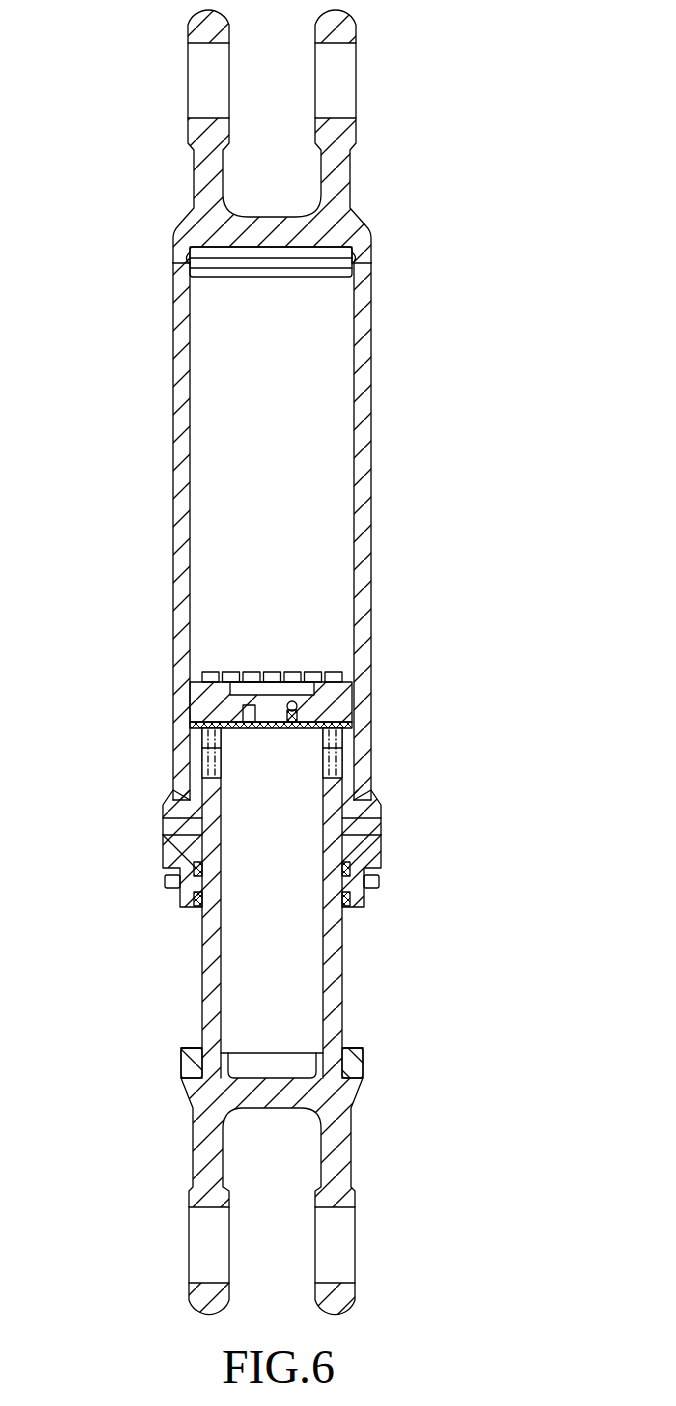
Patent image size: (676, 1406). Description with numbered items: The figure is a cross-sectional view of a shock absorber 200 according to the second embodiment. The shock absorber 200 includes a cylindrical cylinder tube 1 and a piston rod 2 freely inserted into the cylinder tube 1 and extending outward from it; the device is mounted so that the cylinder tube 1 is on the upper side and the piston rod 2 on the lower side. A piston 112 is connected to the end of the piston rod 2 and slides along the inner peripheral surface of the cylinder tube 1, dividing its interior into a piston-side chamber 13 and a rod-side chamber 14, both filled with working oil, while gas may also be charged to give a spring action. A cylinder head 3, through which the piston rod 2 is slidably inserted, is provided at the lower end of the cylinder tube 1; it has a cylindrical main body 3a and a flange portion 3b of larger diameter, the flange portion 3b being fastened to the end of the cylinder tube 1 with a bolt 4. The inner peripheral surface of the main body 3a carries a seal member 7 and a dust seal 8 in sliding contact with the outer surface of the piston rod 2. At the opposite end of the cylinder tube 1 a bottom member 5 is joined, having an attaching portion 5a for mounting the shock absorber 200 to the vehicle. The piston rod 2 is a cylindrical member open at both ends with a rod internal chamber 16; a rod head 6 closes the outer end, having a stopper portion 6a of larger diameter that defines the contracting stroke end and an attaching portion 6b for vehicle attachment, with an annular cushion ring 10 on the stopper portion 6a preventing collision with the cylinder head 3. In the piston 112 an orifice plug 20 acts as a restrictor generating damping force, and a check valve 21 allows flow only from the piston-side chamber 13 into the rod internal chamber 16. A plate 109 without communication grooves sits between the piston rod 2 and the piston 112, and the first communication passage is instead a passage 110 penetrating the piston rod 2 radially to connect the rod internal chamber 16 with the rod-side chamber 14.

The shock absorber 200 is at (413, 130).
The cylinder tube 1 is at (269, 535).
The piston rod 2 is at (277, 902).
The cylinder head 3 is at (291, 854).
The main body 3a is at (368, 820).
The flange portion 3b is at (370, 855).
The bolt 4 is at (378, 885).
The bottom member 5 is at (270, 143).
The attaching portion 5a is at (206, 117).
The rod head 6 is at (269, 1164).
The stopper portion 6a is at (182, 1070).
The attaching portion 6b is at (336, 1208).
The seal member 7 is at (194, 869).
The dust seal 8 is at (194, 899).
The annular cushion ring 10 is at (182, 1052).
The piston-side chamber 13 is at (213, 368).
The rod-side chamber 14 is at (213, 797).
The rod internal chamber 16 is at (285, 1008).
The orifice plug 20 is at (292, 695).
The check valve 21 is at (335, 712).
The plate 109 is at (210, 748).
The passage 110 is at (207, 773).
The piston 112 is at (352, 678).